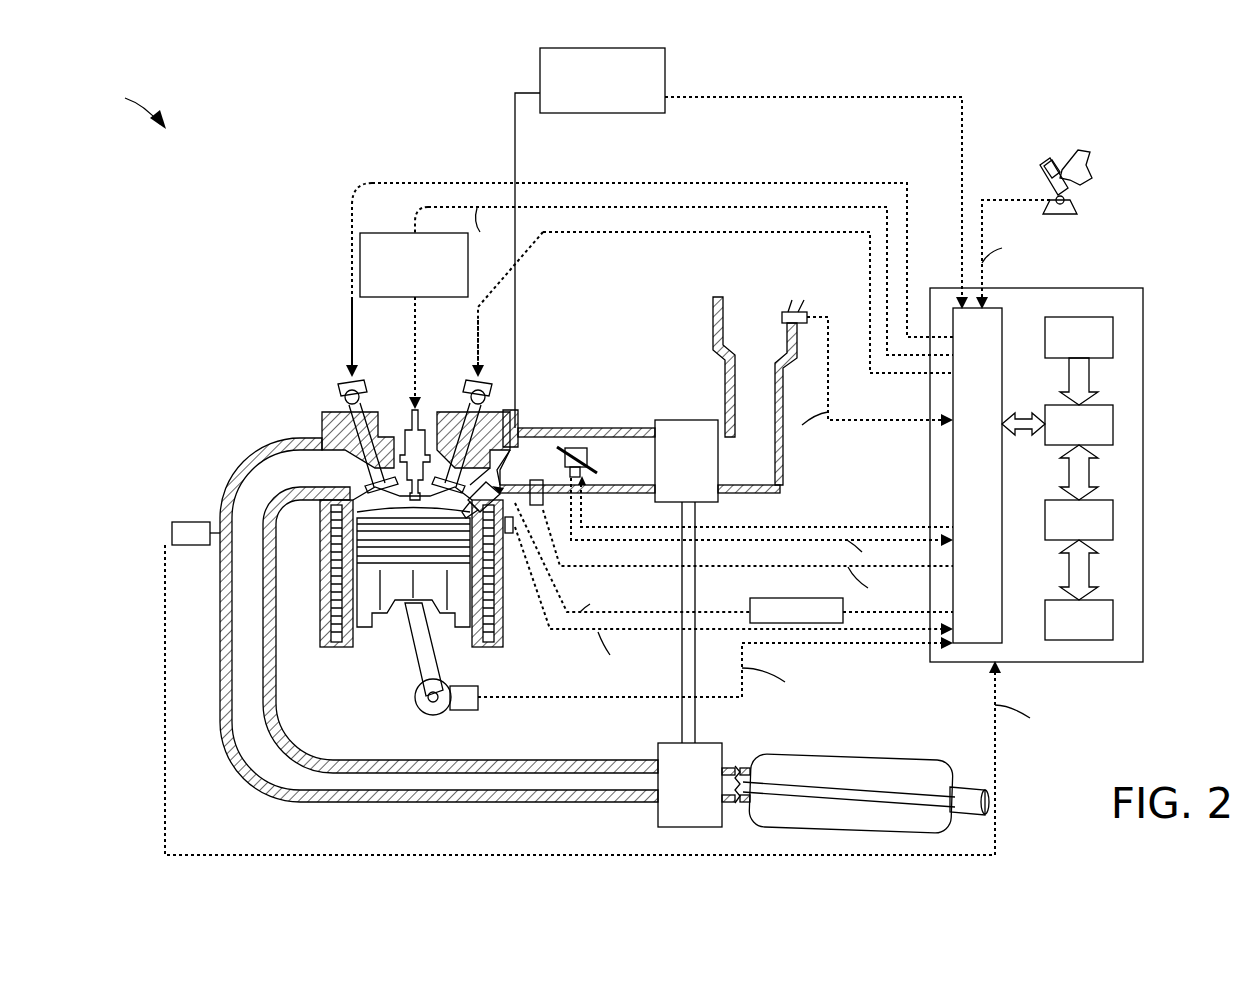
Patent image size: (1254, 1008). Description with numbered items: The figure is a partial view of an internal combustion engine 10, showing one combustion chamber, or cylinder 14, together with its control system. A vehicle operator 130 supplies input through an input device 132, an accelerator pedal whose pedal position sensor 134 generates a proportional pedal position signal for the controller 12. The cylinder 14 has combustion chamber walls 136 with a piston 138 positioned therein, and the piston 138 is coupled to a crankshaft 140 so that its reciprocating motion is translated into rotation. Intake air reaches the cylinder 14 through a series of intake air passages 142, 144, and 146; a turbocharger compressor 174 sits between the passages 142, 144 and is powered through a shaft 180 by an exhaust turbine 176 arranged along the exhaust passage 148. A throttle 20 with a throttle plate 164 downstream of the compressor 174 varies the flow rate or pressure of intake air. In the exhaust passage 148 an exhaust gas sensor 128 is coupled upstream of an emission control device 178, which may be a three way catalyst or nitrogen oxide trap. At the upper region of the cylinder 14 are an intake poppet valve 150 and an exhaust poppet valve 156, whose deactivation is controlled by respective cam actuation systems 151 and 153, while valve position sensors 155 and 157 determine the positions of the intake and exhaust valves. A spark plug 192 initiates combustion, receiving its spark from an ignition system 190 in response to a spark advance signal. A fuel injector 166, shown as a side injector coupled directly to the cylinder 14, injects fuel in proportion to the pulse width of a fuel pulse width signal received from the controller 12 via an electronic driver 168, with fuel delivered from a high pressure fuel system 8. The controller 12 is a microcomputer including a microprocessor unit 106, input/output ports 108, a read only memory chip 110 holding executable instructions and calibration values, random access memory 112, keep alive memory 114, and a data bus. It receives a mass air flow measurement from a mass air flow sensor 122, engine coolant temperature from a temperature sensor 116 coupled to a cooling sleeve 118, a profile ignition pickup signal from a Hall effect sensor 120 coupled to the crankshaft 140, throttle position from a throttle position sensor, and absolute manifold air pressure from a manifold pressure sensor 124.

The internal combustion engine 10 is at (129, 106).
The high pressure fuel system 8 is at (667, 62).
The controller 12 is at (1135, 288).
The cylinder 14 is at (320, 520).
The throttle 20 is at (578, 448).
The microprocessor unit 106 is at (1113, 420).
The input/output ports 108 is at (1002, 318).
The read only memory chip 110 is at (1113, 335).
The random access memory 112 is at (1113, 520).
The keep alive memory 114 is at (1113, 620).
The temperature sensor 116 is at (508, 550).
The cooling sleeve 118 is at (510, 557).
The Hall effect sensor 120 is at (465, 712).
The mass air flow sensor 122 is at (800, 312).
The manifold pressure sensor 124 is at (537, 505).
The exhaust gas sensor 128 is at (172, 530).
The vehicle operator 130 is at (1083, 170).
The input device 132 is at (1040, 178).
The pedal position sensor 134 is at (1072, 203).
The combustion chamber walls 136 is at (337, 650).
The piston 138 is at (395, 600).
The crankshaft 140 is at (422, 712).
The intake air passage 142 is at (766, 343).
The intake air passage 144 is at (640, 471).
The intake air passage 146 is at (546, 471).
The exhaust passage 148 is at (270, 481).
The intake poppet valve 150 is at (428, 440).
The cam actuation system 151 is at (472, 372).
The cam actuation system 153 is at (358, 372).
The valve position sensor 155 is at (500, 395).
The valve position sensor 157 is at (340, 395).
The exhaust poppet valve 156 is at (330, 435).
The throttle plate 164 is at (560, 448).
The fuel injector 166 is at (483, 490).
The electronic driver 168 is at (750, 603).
The compressor 174 is at (672, 420).
The exhaust turbine 176 is at (658, 820).
The emission control device 178 is at (905, 757).
The shaft 180 is at (690, 706).
The ignition system 190 is at (375, 232).
The spark plug 192 is at (405, 435).